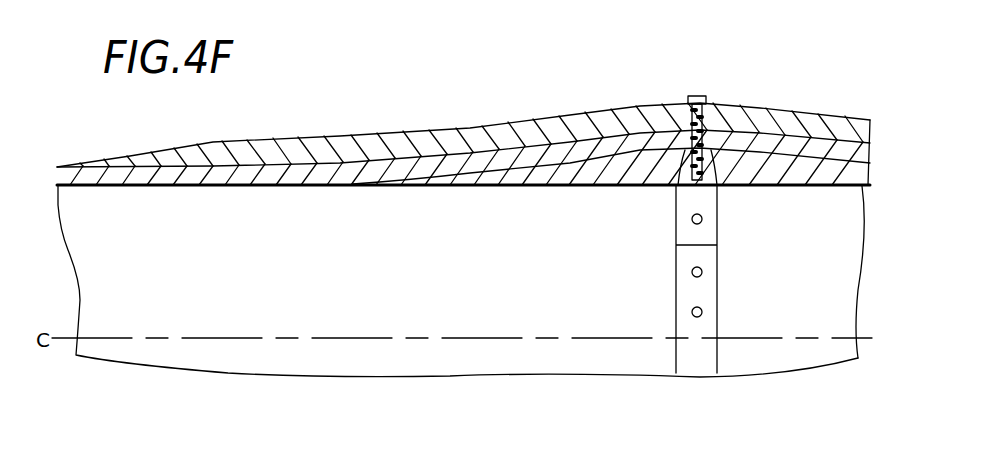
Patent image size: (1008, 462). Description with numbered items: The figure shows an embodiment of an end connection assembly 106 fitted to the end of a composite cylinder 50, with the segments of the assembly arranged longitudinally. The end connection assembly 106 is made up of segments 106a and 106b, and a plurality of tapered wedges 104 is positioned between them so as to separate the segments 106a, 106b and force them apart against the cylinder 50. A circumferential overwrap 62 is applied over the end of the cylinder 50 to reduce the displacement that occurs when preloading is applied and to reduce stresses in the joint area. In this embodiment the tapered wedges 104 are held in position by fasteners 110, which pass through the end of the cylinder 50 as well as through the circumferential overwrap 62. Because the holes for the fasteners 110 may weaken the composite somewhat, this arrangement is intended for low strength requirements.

The composite cylinder 50 is at (78, 166).
The circumferential overwrap 62 is at (325, 145).
The end connection assembly 106 is at (605, 155).
The segment 106a is at (570, 167).
The segment 106b is at (777, 163).
The tapered wedge 104 is at (674, 148).
The fastener 110 is at (699, 96).